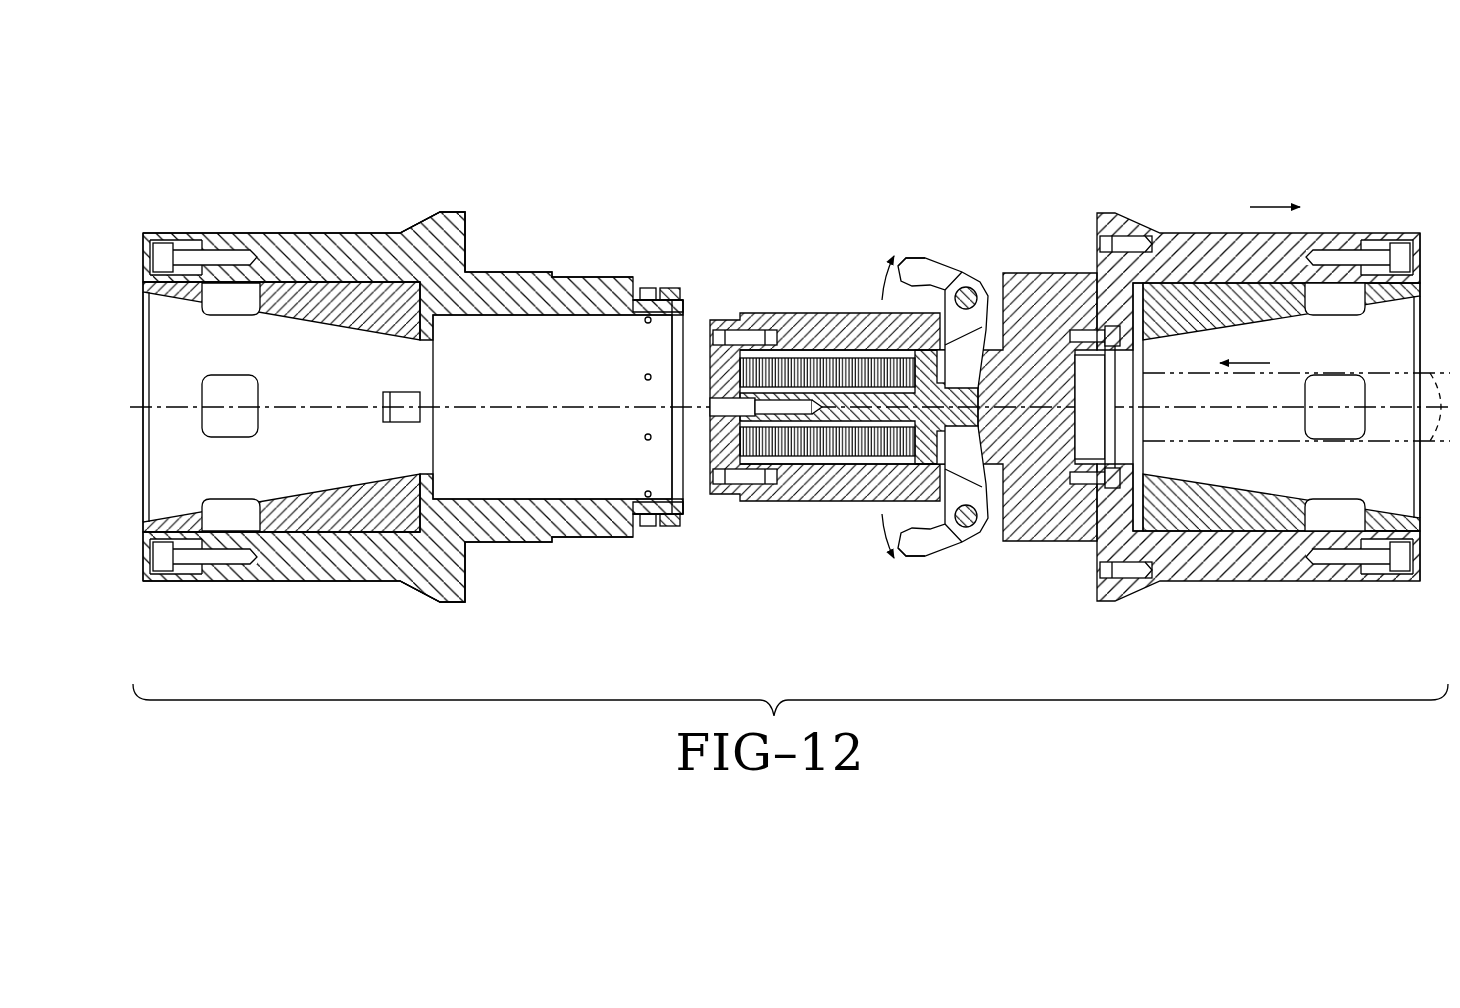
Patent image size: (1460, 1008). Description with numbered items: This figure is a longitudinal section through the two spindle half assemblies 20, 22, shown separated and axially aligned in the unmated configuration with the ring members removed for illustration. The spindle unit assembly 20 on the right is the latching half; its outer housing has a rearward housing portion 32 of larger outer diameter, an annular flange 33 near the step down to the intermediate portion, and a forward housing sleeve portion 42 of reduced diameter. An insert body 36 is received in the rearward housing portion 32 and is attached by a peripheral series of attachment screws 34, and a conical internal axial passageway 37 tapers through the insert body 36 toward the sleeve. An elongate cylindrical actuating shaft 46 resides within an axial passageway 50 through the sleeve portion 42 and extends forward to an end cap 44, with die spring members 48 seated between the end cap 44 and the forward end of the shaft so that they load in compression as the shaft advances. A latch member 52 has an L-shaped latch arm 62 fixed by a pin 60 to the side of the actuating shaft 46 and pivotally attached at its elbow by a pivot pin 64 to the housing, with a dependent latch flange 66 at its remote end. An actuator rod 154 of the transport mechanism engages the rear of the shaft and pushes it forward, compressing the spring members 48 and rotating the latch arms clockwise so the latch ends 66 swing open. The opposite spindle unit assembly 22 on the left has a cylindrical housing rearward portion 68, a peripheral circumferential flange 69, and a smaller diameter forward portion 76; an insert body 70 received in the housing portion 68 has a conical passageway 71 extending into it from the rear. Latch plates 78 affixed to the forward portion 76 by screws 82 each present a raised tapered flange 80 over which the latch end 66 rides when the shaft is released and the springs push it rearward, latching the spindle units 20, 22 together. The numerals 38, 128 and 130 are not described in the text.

The spindle unit assembly 20 is at (1272, 361).
The spindle unit assembly 22 is at (424, 361).
The rearward housing portion 32 is at (1205, 255).
The annular flange 33 is at (1110, 215).
The attachment screws 34 is at (1403, 255).
The insert body 36 is at (1278, 318).
The conical internal axial passageway 37 is at (1225, 460).
The bolt 38 is at (1378, 240).
The forward housing sleeve portion 42 is at (842, 424).
The end cap 44 is at (726, 372).
The actuating shaft 46 is at (1001, 374).
The die spring members 48 is at (785, 375).
The axial passageway 50 is at (540, 355).
The latch member 52 is at (943, 356).
The pin 60 is at (1000, 348).
The latch arm 62 is at (962, 369).
The pivot pin 64 is at (970, 287).
The latch flange 66 is at (905, 258).
The housing rearward portion 68 is at (283, 248).
The circumferential flange 69 is at (453, 216).
The insert body 70 is at (372, 326).
The conical passageway 71 is at (272, 457).
The forward portion 76 is at (508, 290).
The latch plates 78 is at (640, 305).
The raised tapered flange 80 is at (676, 290).
The screws 82 is at (647, 288).
The hub 128 is at (435, 442).
The bolt 130 is at (190, 245).
The actuator rod 154 is at (1250, 445).